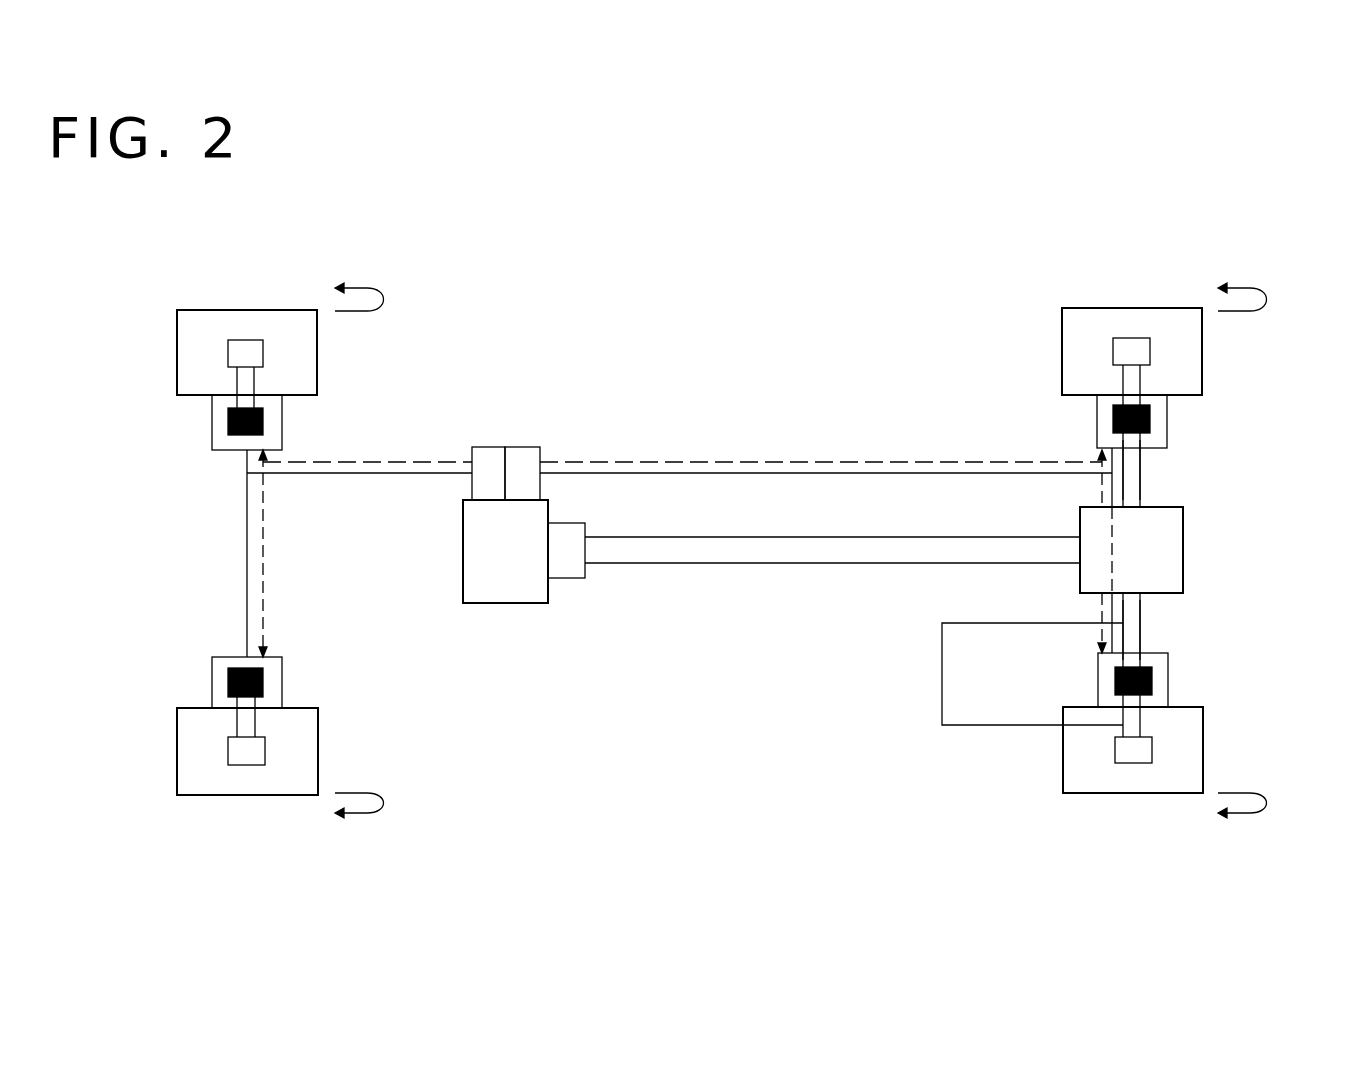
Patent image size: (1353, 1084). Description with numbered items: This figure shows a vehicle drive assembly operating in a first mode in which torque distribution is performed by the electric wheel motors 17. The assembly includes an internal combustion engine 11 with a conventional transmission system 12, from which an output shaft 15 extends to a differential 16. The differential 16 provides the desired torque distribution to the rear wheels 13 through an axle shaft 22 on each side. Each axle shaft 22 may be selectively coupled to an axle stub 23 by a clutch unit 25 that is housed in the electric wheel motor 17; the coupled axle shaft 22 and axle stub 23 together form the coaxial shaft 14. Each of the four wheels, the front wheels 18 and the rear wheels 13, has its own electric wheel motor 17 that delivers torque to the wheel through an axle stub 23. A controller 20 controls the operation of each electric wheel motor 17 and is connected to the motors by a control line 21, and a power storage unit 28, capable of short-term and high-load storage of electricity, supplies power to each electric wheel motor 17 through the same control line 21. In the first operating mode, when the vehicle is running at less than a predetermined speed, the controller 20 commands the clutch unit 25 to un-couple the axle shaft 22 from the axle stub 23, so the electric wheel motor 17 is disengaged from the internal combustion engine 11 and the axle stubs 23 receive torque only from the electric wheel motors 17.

The internal combustion engine 11 is at (515, 583).
The transmission system 12 is at (567, 562).
The wheels 13 is at (1092, 322).
The coaxial shaft 14 is at (1021, 674).
The output shaft 15 is at (752, 550).
The differential 16 is at (1170, 550).
The electric wheel motor 17 is at (227, 443).
The wheels 18 is at (213, 327).
The controller 20 is at (523, 453).
The control line 21 is at (717, 473).
The axle shaft 22 is at (1133, 465).
The axle stub 23 is at (245, 383).
The clutch unit 25 is at (1150, 432).
The power storage unit 28 is at (490, 453).